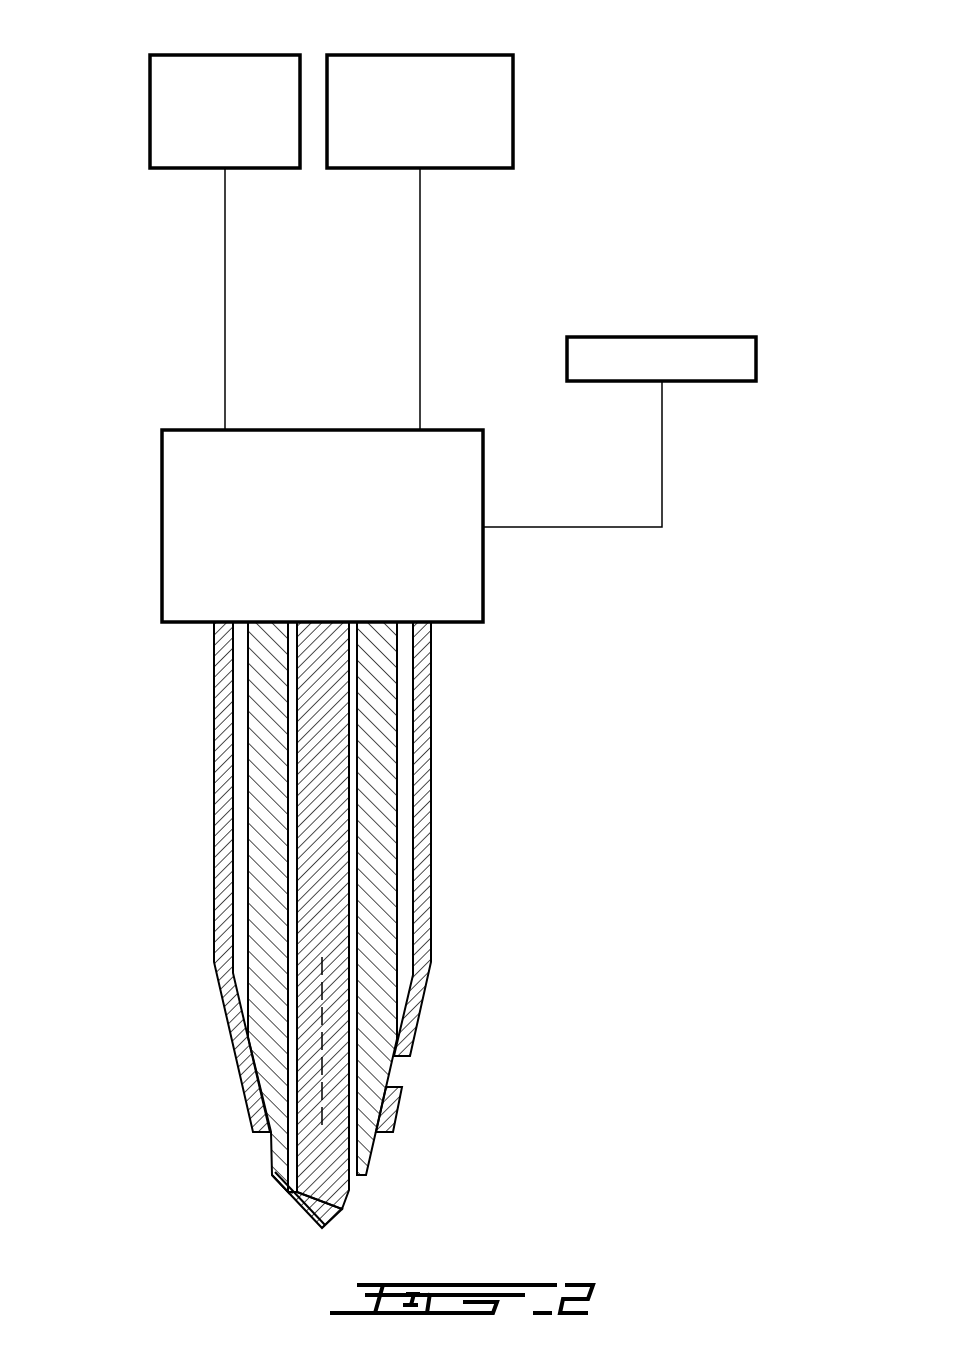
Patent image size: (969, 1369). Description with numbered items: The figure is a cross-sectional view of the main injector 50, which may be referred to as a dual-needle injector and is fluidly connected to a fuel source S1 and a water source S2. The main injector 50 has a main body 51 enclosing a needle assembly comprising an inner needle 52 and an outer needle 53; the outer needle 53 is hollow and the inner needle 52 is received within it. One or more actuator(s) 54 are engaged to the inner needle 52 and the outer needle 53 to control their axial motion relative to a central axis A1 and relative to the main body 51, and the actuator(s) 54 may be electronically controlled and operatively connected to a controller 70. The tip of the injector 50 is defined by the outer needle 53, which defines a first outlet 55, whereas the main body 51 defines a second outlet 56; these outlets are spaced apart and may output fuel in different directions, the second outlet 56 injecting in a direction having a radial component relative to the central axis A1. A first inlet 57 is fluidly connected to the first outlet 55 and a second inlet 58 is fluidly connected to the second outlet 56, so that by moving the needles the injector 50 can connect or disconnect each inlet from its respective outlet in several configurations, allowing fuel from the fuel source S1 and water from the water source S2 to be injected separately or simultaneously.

The fuel source S1 is at (150, 110).
The water source S2 is at (513, 110).
The controller 70 is at (756, 360).
The actuator(s) 54 is at (483, 568).
The first inlet 57 is at (225, 430).
The second inlet 58 is at (420, 430).
The main injector 50 is at (740, 116).
The main body 51 is at (431, 776).
The outer needle 53 is at (370, 722).
The inner needle 52 is at (320, 775).
The first outlet 55 is at (358, 1178).
The second outlet 56 is at (388, 1087).
The central axis A1 is at (322, 970).